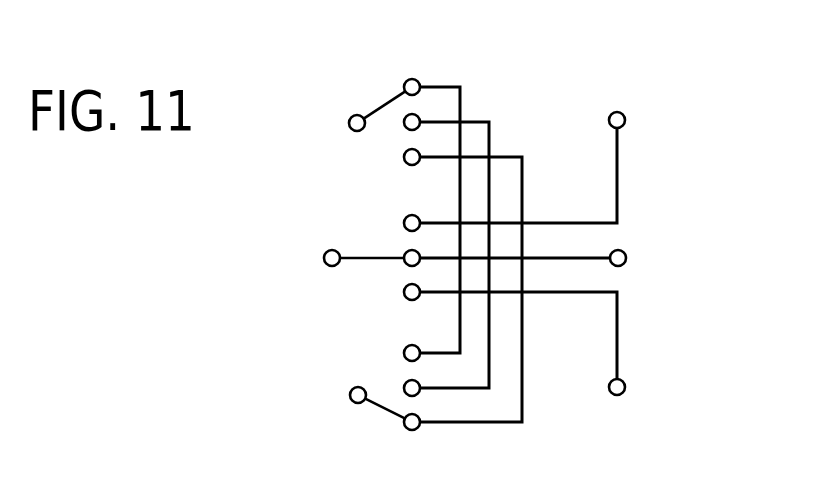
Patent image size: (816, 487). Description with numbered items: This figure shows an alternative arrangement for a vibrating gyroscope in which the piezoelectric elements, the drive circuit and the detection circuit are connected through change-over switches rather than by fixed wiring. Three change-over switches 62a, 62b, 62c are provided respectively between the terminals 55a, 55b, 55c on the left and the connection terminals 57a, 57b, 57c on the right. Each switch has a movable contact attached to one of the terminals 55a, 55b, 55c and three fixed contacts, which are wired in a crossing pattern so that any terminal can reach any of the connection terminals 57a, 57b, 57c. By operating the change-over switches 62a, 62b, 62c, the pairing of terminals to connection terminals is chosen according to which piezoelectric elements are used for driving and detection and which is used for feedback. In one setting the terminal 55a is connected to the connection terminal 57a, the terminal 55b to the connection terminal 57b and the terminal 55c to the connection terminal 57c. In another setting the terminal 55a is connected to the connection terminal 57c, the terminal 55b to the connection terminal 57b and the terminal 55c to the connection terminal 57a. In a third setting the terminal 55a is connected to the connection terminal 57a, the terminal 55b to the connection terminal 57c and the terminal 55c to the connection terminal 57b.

The terminal 55a is at (349, 124).
The terminal 55b is at (324, 258).
The terminal 55c is at (350, 395).
The connection terminal 57a is at (625, 123).
The connection terminal 57b is at (626, 260).
The connection terminal 57c is at (623, 382).
The change-over switch 62a is at (377, 96).
The change-over switch 62b is at (371, 240).
The change-over switch 62c is at (372, 416).